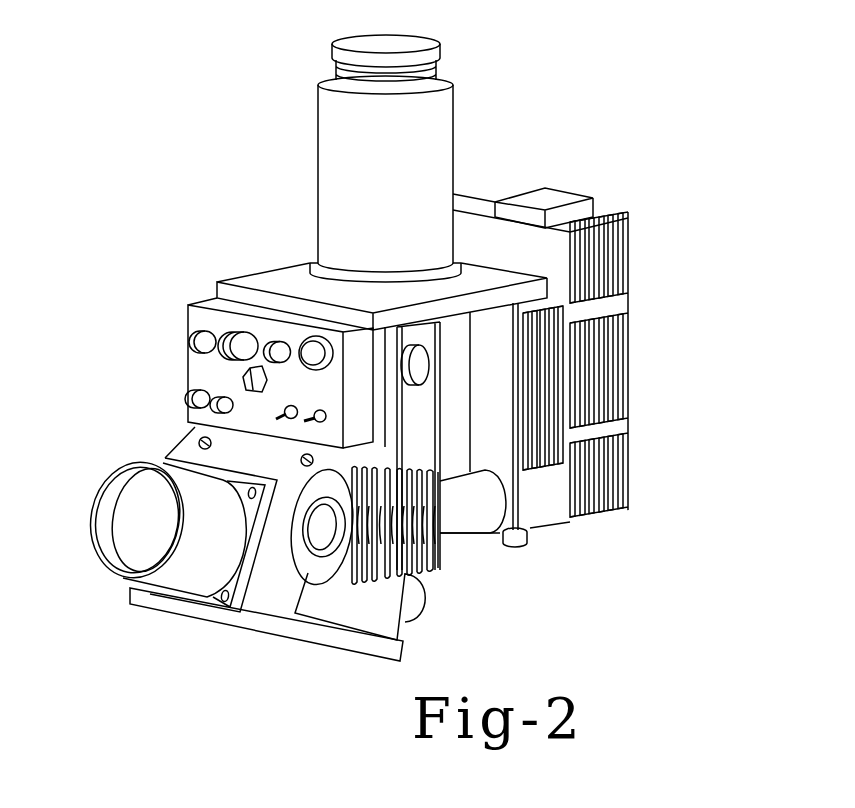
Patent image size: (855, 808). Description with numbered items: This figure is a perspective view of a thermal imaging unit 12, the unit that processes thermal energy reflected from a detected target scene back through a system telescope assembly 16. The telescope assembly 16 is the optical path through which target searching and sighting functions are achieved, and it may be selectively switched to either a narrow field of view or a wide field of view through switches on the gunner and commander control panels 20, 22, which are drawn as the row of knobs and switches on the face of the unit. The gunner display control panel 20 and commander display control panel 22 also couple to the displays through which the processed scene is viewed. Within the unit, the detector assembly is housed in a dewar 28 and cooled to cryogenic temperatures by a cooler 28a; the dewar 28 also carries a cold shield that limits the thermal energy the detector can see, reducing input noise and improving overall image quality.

The thermal imaging unit 12 is at (684, 226).
The telescope assembly 16 is at (442, 128).
The gunner control panel 20 is at (234, 373).
The commander control panel 22 is at (203, 371).
The dewar 28 is at (320, 537).
The cooler 28a is at (472, 502).